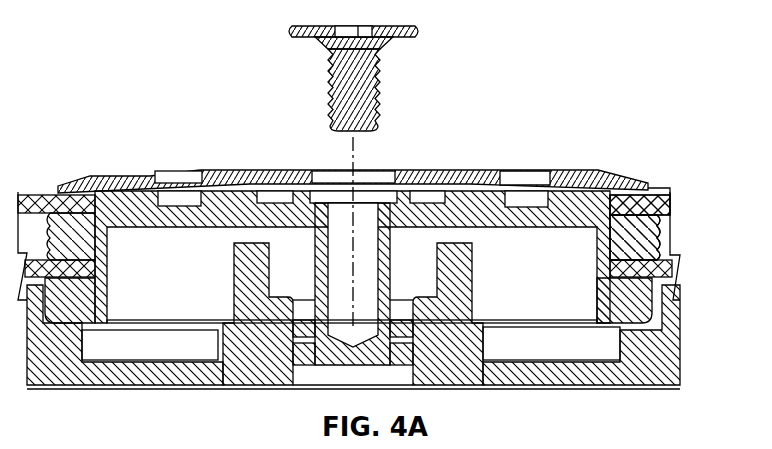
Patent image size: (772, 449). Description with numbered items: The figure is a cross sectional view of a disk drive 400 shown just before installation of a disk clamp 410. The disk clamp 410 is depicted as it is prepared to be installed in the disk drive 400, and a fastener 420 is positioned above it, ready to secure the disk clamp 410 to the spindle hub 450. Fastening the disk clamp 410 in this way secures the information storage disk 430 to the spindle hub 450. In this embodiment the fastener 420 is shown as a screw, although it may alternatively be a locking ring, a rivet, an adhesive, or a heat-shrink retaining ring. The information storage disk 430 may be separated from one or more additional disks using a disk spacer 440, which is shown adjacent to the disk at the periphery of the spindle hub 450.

The disk drive 400 is at (377, 225).
The disk clamp 410 is at (125, 168).
The fastener 420 is at (392, 87).
The information storage disk 430 is at (674, 206).
The disk spacer 440 is at (658, 233).
The spindle hub 450 is at (581, 328).